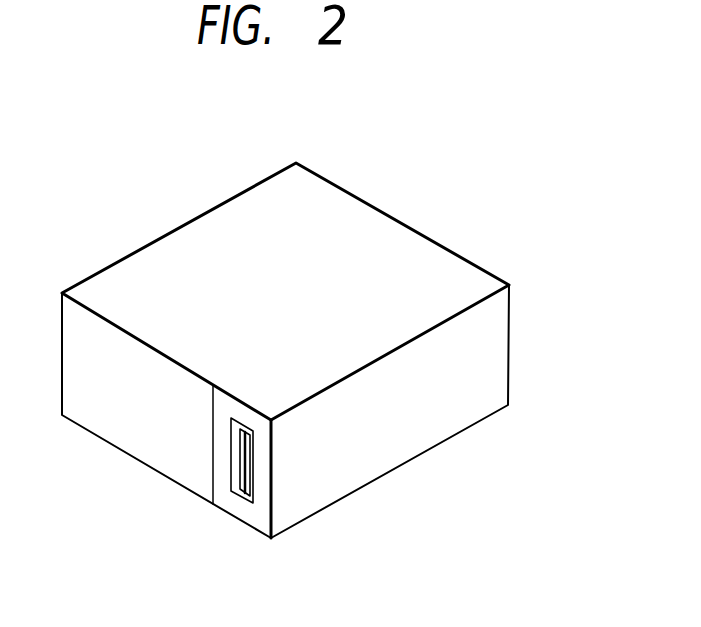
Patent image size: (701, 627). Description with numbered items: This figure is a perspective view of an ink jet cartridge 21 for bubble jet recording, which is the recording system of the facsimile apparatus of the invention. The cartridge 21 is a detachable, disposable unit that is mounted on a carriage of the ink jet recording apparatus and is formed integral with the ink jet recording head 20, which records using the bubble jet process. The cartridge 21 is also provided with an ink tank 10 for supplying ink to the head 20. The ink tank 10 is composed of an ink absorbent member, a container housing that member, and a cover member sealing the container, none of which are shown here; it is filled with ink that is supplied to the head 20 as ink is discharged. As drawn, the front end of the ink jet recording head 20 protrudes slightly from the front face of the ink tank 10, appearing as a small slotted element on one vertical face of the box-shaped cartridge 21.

The ink tank 10 is at (227, 208).
The ink jet cartridge 21 is at (411, 222).
The ink jet recording head 20 is at (255, 520).